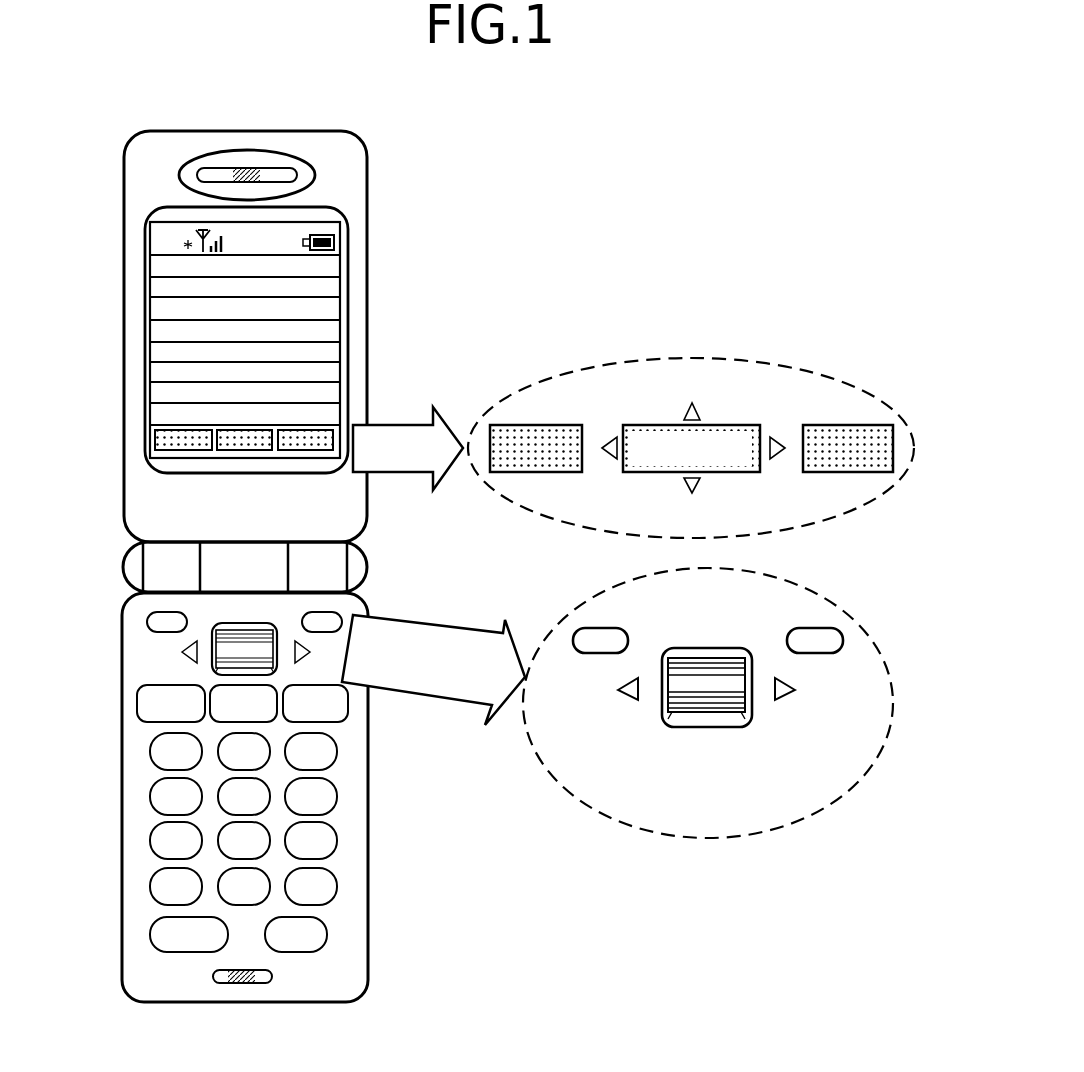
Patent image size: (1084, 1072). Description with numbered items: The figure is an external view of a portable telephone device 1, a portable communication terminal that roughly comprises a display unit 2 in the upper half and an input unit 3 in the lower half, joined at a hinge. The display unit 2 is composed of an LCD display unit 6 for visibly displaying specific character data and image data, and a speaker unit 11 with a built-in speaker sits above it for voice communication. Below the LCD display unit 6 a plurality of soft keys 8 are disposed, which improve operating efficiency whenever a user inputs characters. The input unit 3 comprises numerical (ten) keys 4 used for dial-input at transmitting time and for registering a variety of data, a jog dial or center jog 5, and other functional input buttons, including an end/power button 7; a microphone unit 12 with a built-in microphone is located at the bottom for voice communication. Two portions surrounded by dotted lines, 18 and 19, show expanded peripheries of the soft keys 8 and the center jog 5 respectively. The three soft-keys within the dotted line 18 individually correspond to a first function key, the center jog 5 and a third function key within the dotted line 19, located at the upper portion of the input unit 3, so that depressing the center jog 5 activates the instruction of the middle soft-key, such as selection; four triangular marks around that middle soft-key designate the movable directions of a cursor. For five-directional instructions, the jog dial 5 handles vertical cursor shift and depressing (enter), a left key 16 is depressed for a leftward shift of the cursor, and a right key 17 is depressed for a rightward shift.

The portable telephone device 1 is at (215, 131).
The display unit 2 is at (110, 212).
The input unit 3 is at (110, 600).
The numerical (ten) keys 4 is at (380, 738).
The jog dial (center jog) 5 is at (246, 627).
The LCD display unit 6 is at (348, 344).
The end/power key 7 is at (348, 704).
The soft keys 8 is at (243, 452).
The speaker unit 11 is at (285, 163).
The microphone unit 12 is at (243, 985).
The left key 16 is at (630, 703).
The right key 17 is at (785, 703).
The dotted line (expanded periphery of the soft keys) 18 is at (699, 358).
The dotted line (expanded periphery of the center jog) 19 is at (707, 840).